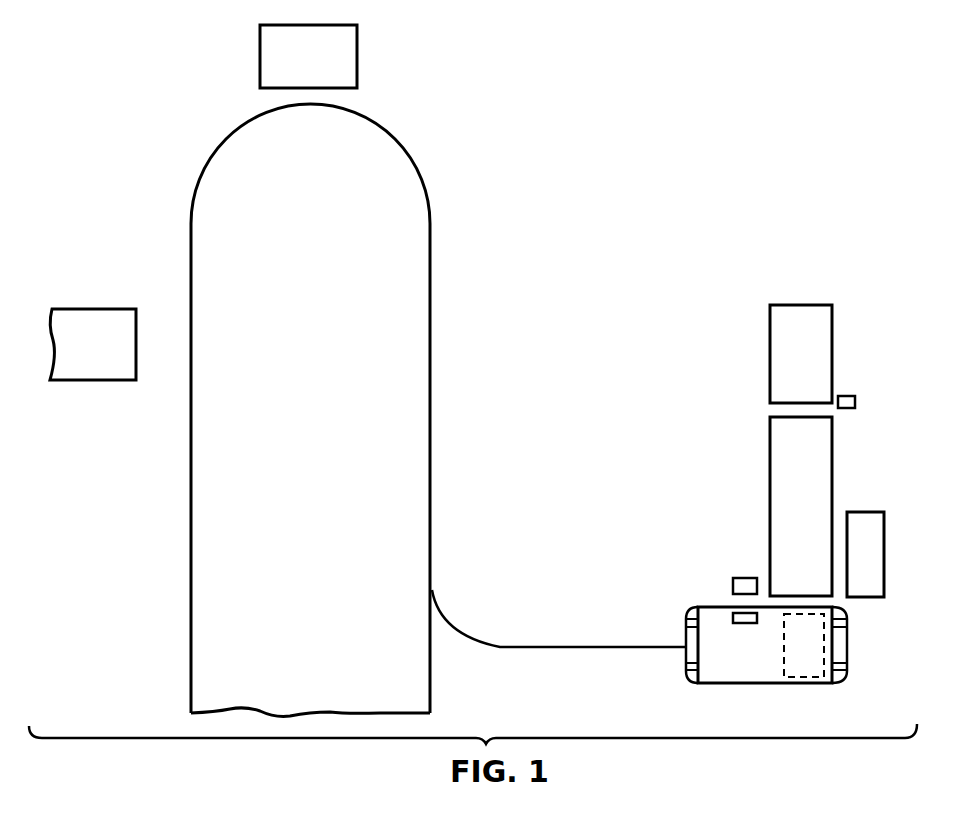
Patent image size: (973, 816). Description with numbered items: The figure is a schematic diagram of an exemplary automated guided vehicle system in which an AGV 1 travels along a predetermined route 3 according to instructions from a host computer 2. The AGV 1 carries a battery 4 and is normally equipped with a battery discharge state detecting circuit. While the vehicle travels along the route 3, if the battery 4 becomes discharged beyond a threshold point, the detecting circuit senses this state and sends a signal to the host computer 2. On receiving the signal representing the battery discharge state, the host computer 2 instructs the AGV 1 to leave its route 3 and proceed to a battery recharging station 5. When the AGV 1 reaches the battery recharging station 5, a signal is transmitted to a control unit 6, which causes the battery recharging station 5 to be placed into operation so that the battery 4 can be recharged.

The AGV 1 is at (699, 604).
The host computer 2 is at (350, 71).
The predetermined route 3 is at (432, 405).
The battery 4 is at (808, 647).
The battery recharging station 5 is at (858, 402).
The control unit 6 is at (880, 556).